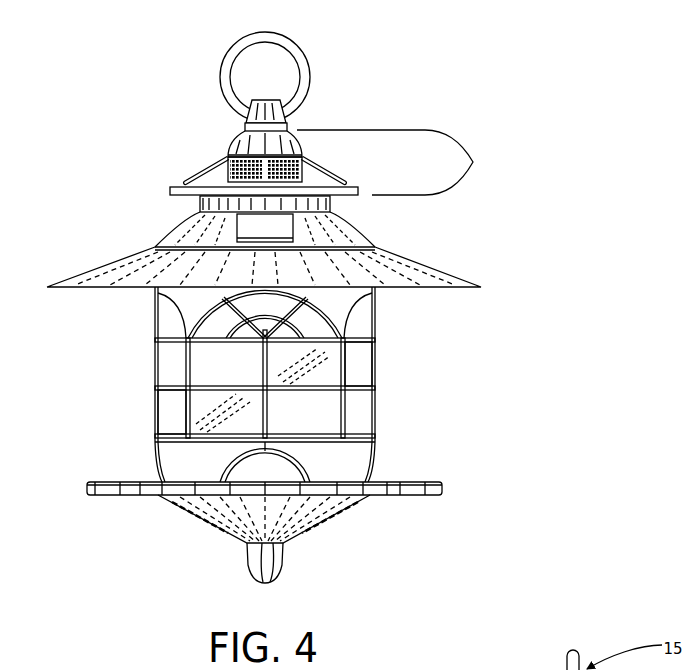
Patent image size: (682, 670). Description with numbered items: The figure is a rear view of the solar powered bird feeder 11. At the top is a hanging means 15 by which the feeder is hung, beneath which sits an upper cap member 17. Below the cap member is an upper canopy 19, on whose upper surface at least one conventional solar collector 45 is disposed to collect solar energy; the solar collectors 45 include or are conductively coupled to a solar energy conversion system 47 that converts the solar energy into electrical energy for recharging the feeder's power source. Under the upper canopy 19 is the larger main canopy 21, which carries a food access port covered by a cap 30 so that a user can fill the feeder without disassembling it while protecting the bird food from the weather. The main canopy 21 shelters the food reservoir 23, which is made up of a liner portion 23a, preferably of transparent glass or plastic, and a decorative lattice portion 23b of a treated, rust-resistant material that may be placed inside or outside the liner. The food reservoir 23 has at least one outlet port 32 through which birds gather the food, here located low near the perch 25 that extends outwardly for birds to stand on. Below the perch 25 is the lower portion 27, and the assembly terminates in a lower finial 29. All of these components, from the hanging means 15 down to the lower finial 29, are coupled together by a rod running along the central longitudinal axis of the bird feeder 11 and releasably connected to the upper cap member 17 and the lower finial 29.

The bird feeder 11 is at (553, 377).
The hanging means 15 is at (313, 67).
The upper cap member 17 is at (289, 120).
The upper canopy 19 is at (473, 162).
The main canopy 21 is at (318, 241).
The food reservoir 23 is at (392, 342).
The liner portion 23a is at (357, 368).
The decorative lattice portion 23b is at (175, 387).
The perch 25 is at (417, 478).
The lower portion 27 is at (302, 513).
The lower finial 29 is at (288, 570).
The cap 30 is at (252, 228).
The outlet port 32 is at (255, 468).
The solar collector 45 is at (250, 165).
The solar energy conversion system 47 is at (213, 180).